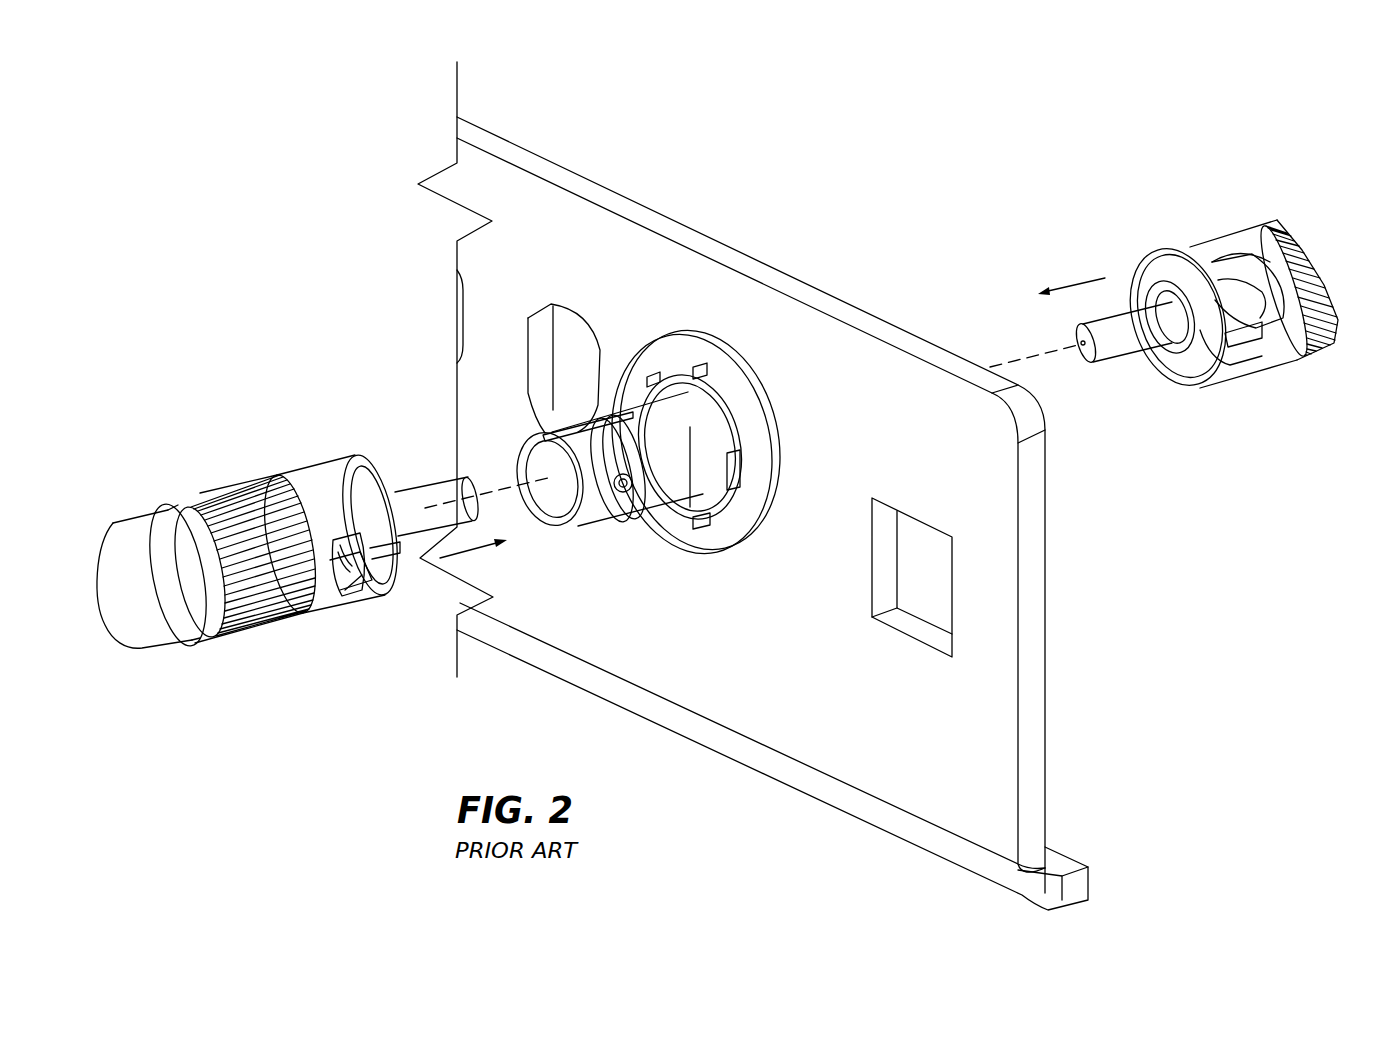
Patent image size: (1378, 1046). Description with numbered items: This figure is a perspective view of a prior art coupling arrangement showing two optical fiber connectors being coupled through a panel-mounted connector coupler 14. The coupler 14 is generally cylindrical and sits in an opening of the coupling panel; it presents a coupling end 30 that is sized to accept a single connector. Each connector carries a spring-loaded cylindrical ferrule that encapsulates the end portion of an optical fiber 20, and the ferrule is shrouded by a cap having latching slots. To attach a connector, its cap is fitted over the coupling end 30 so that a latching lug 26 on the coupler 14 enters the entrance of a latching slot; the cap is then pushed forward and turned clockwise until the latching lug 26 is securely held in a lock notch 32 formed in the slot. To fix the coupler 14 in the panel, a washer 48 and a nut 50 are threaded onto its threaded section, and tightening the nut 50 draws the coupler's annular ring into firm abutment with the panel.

The optical fiber connector coupler 14 is at (641, 525).
The optical fiber 20 is at (1077, 343).
The latching lug 26 is at (630, 512).
The second coupling end 30 is at (496, 461).
The lock notch 32 is at (371, 540).
The washer 48 is at (752, 467).
The nut 50 is at (700, 362).